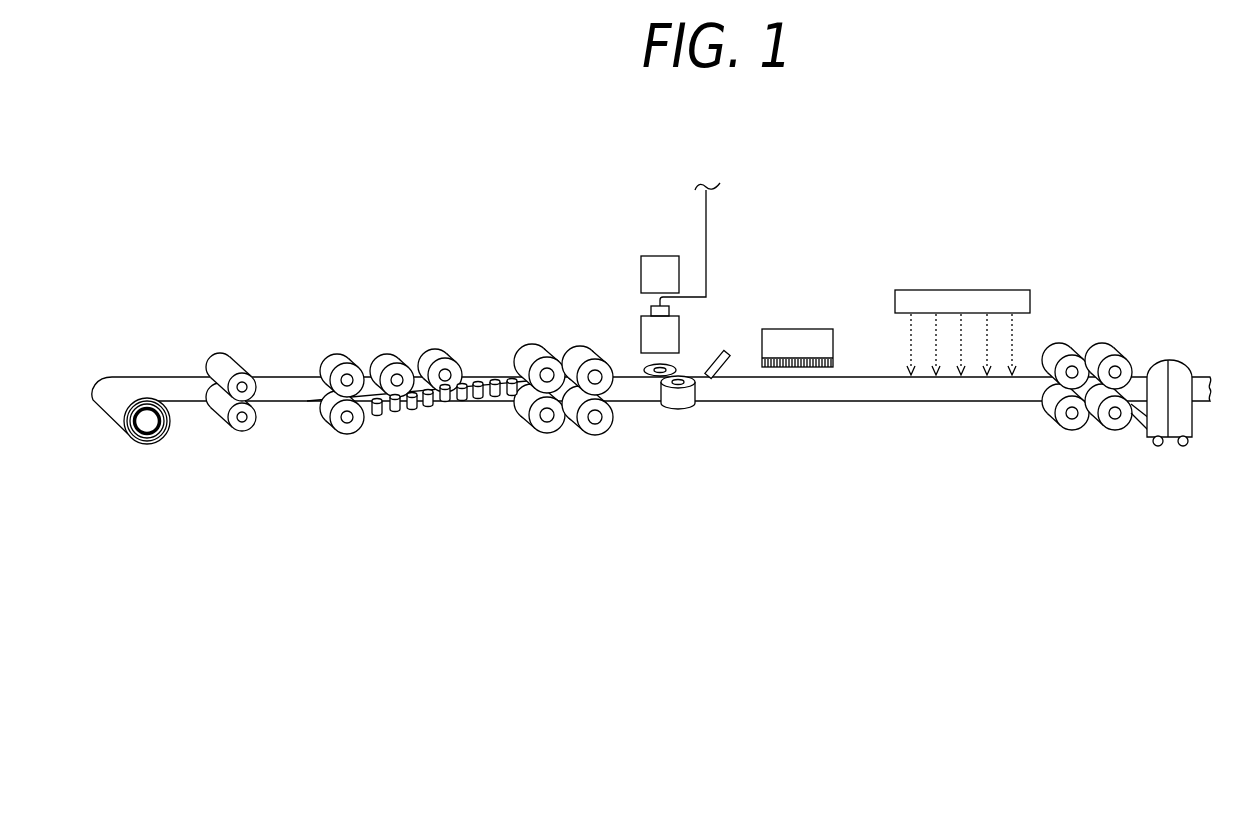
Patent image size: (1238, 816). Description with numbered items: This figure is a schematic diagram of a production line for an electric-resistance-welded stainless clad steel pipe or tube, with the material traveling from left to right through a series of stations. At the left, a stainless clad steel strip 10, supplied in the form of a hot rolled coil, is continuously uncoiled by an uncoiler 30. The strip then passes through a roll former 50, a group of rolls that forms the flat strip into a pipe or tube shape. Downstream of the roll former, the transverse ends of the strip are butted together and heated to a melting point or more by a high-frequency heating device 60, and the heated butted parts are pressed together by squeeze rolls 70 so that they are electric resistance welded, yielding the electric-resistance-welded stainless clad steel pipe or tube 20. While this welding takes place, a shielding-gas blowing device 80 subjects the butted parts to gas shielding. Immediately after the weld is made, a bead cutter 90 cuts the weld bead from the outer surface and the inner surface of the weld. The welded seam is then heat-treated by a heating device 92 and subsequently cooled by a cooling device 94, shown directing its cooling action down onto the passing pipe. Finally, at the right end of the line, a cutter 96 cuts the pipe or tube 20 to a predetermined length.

The stainless clad steel strip 10 is at (142, 380).
The electric-resistance-welded stainless clad steel pipe or tube 20 is at (737, 398).
The uncoiler 30 is at (152, 423).
The roll former 50 is at (605, 443).
The high-frequency heating device 60 is at (650, 275).
The squeeze rolls 70 is at (675, 410).
The shielding-gas blowing device 80 is at (648, 336).
The bead cutter 90 is at (723, 352).
The heating device 92 is at (797, 340).
The cooling device 94 is at (966, 298).
The cutter 96 is at (1177, 370).